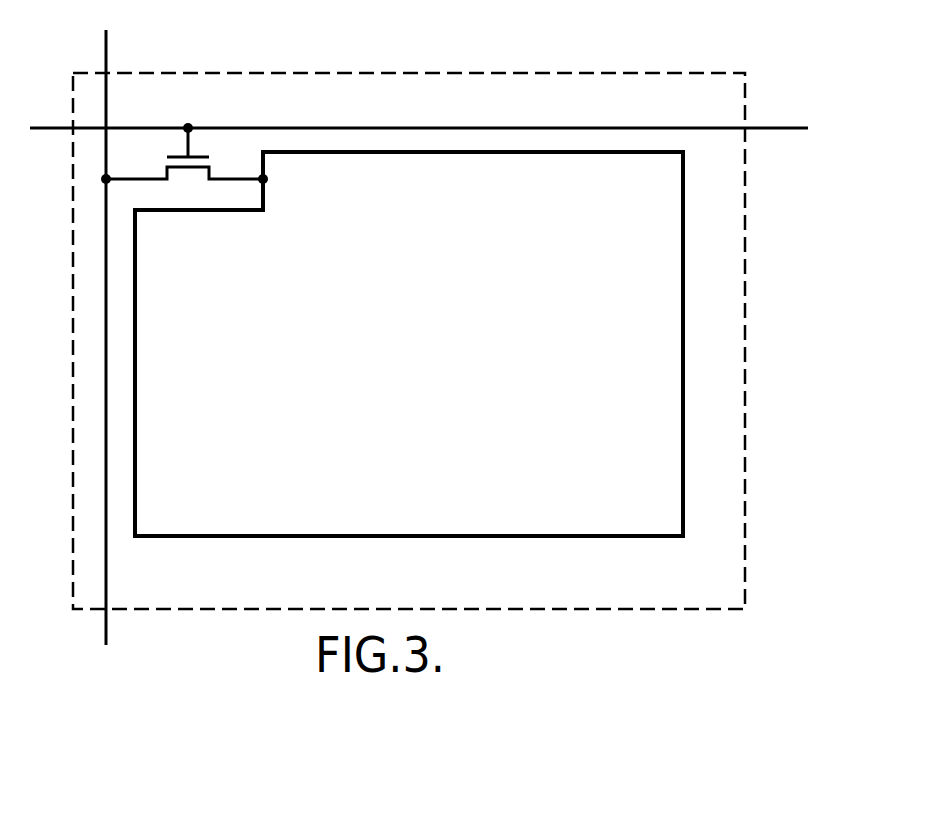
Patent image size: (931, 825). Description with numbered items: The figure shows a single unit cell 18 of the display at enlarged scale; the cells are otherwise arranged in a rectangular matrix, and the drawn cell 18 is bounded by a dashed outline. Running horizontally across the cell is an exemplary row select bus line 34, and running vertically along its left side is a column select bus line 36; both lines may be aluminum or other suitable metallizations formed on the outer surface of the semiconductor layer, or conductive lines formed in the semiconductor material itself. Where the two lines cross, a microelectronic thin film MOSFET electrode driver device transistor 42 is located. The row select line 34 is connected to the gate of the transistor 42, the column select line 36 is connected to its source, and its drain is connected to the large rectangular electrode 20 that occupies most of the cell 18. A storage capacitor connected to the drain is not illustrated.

The unit cell 18 is at (745, 290).
The electrode 20 is at (685, 466).
The row select bus line 34 is at (50, 128).
The column select bus line 36 is at (106, 52).
The thin film MOSFET electrode driver device transistor 42 is at (205, 119).